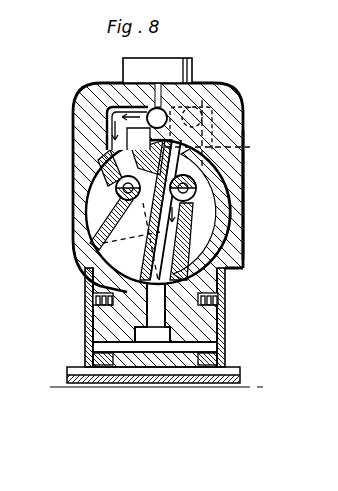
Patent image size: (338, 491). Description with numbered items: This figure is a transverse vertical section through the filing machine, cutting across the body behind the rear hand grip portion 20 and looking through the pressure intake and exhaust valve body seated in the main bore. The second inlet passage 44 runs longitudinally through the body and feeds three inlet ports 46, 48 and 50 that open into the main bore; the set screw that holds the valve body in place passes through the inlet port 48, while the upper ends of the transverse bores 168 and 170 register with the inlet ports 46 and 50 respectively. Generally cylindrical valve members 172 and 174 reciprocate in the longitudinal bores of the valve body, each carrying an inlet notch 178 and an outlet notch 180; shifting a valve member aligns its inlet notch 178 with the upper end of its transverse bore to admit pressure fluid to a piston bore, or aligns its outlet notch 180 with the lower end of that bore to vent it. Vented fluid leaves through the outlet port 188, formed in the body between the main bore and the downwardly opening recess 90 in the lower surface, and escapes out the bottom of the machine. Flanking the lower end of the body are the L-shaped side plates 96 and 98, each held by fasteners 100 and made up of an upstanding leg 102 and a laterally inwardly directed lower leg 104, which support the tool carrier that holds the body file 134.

The rear hand grip portion 20 is at (192, 82).
The second inlet passage 44 is at (124, 107).
The inlet port 46 is at (243, 147).
The inlet port 48 is at (107, 125).
The inlet port 50 is at (100, 143).
The downwardly opening recess 90 is at (152, 325).
The side plate 96 is at (225, 323).
The side plate 98 is at (87, 327).
The fasteners 100 is at (88, 291).
The upstanding leg 102 is at (90, 305).
The lower leg 104 is at (83, 370).
The body file 134 is at (242, 384).
The transverse bore 168 is at (213, 230).
The transverse bore 170 is at (78, 246).
The valve member 172 is at (197, 187).
The valve member 174 is at (113, 195).
The inlet notch 178 is at (110, 172).
The outlet notch 180 is at (243, 201).
The outlet port 188 is at (137, 335).